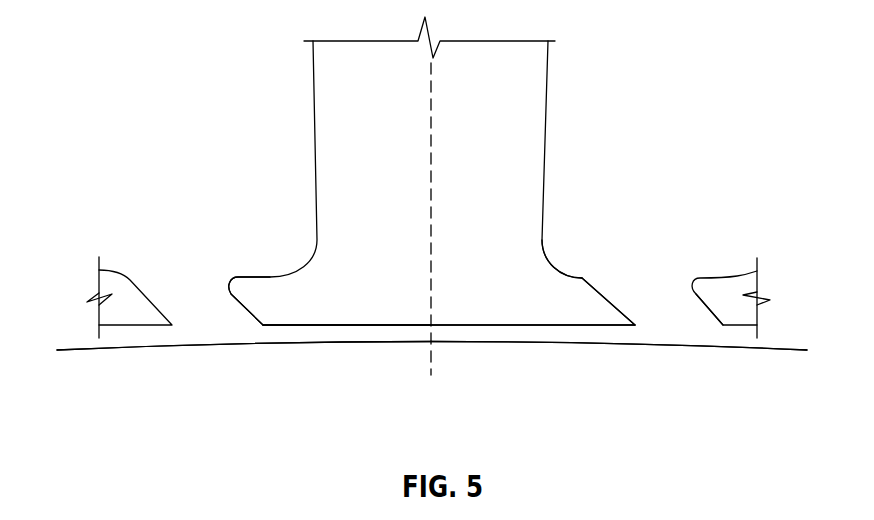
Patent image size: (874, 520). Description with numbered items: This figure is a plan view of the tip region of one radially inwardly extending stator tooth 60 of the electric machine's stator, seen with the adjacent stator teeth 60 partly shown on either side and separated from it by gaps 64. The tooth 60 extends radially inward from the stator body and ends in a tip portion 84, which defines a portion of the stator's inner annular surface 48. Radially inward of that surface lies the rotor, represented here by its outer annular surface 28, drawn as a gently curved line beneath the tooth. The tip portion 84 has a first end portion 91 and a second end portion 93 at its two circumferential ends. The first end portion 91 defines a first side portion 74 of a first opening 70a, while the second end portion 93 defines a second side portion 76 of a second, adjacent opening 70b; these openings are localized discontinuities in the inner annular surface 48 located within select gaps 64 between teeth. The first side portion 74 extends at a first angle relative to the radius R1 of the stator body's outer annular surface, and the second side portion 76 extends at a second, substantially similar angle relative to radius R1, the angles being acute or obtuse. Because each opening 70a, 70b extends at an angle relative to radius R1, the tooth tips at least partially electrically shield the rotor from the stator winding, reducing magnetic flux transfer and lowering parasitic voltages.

The outer annular surface 28 is at (73, 348).
The inner annular surface 48 is at (522, 327).
The radially inwardly extending stator tooth 60 is at (263, 158).
The gap 64 is at (590, 155).
The first opening 70a is at (658, 347).
The second opening 70b is at (202, 355).
The first side portion 74 is at (603, 292).
The second side portion 76 is at (717, 316).
The tip portion 84 is at (350, 297).
The first end portion 91 is at (578, 298).
The second end portion 93 is at (268, 298).
The radius R1 is at (432, 352).